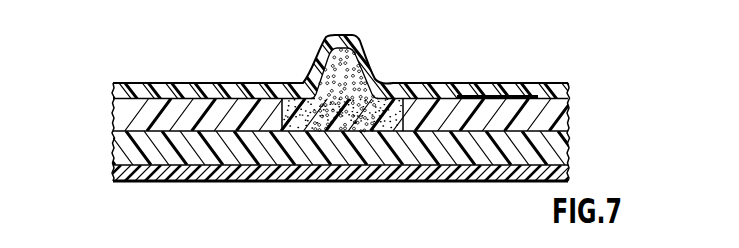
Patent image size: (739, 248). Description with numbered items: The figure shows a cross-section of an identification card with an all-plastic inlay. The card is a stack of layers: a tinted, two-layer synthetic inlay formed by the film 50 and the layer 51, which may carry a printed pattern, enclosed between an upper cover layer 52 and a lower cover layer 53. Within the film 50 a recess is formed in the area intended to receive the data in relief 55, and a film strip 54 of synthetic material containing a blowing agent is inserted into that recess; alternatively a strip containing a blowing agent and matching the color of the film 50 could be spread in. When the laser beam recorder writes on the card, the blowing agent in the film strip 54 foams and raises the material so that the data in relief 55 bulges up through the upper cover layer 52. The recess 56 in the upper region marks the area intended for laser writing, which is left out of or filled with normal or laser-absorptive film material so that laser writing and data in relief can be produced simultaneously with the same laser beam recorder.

The film 50 is at (117, 115).
The synthetic inlay layer 51 is at (118, 155).
The upper cover layer 52 is at (117, 90).
The lower cover layer 53 is at (117, 168).
The film strip 54 is at (291, 103).
The data in relief 55 is at (354, 50).
The recess 56 is at (515, 95).